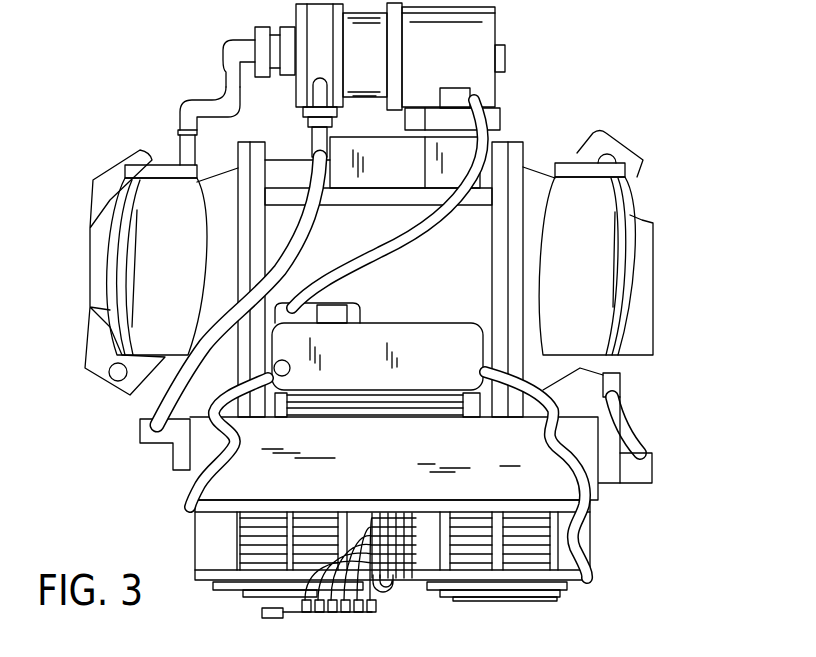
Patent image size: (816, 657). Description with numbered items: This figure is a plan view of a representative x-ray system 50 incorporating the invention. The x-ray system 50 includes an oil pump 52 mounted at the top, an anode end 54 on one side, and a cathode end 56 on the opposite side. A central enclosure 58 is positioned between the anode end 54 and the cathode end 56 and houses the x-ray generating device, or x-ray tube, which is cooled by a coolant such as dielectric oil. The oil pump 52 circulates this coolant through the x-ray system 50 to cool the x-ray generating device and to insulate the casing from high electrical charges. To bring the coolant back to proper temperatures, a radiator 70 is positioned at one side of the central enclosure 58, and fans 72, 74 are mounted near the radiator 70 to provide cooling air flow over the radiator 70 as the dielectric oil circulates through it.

The x-ray system 50 is at (640, 80).
The oil pump 52 is at (467, 38).
The anode end 54 is at (143, 260).
The cathode end 56 is at (645, 211).
The central enclosure 58 is at (475, 231).
The radiator 70 is at (225, 487).
The fan 72 is at (240, 578).
The fan 74 is at (565, 574).